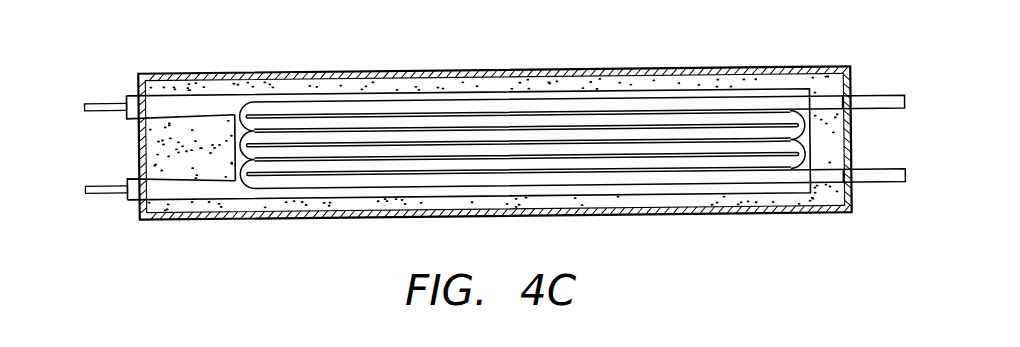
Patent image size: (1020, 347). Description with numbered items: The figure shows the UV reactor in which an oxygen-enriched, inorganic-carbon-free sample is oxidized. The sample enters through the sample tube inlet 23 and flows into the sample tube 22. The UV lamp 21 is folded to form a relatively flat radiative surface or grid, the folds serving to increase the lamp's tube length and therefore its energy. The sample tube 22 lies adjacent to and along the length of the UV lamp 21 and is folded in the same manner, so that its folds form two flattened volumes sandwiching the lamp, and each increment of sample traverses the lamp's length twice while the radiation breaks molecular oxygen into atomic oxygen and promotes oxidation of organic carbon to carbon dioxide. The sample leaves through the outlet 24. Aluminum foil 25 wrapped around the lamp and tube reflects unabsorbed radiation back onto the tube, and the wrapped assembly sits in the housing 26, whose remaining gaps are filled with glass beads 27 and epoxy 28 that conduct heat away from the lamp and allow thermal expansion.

The UV lamp 21 is at (270, 70).
The sample tube 22 is at (388, 99).
The sample tube inlet 23 is at (892, 187).
The outlet 24 is at (886, 99).
The aluminum foil 25 is at (806, 91).
The housing 26 is at (575, 70).
The glass beads 27 is at (828, 80).
The epoxy 28 is at (494, 145).